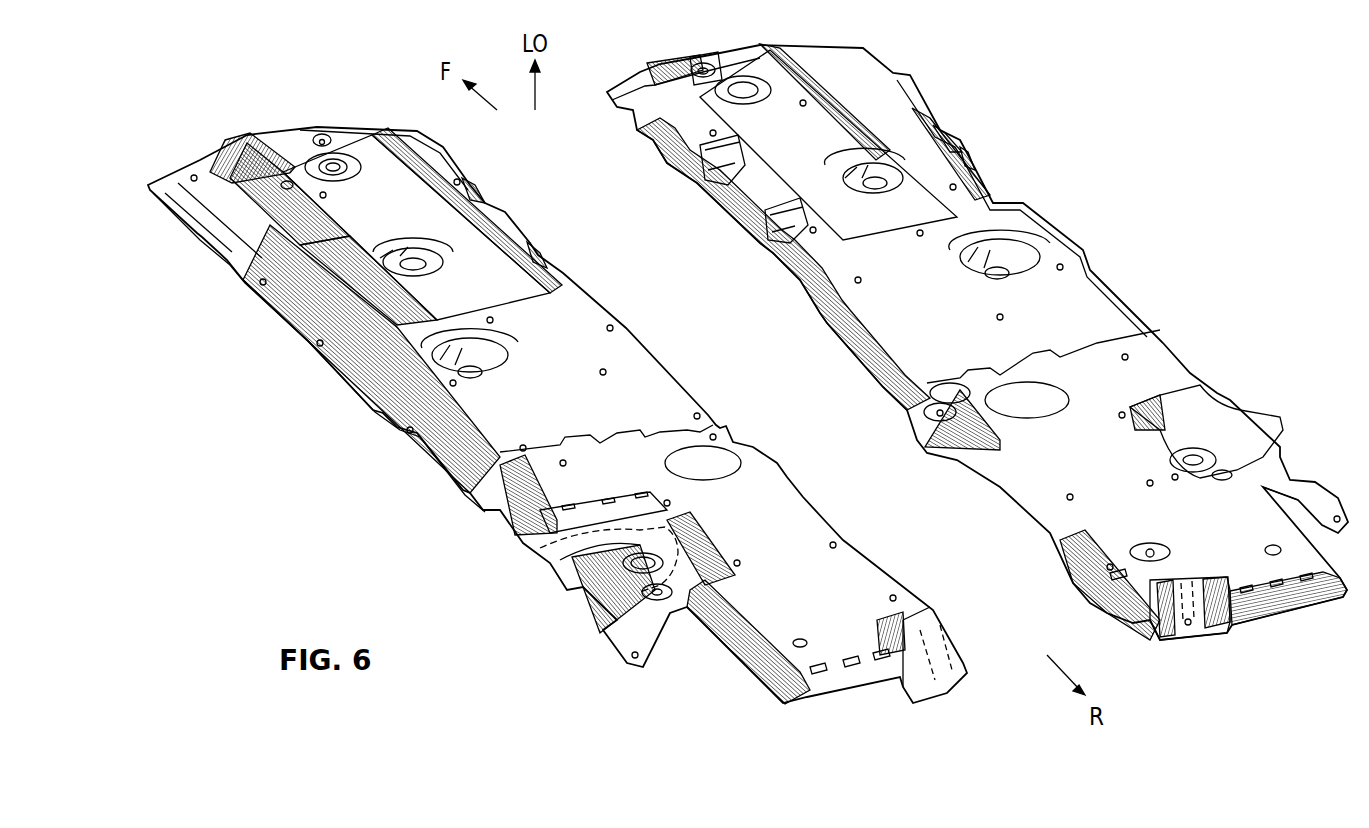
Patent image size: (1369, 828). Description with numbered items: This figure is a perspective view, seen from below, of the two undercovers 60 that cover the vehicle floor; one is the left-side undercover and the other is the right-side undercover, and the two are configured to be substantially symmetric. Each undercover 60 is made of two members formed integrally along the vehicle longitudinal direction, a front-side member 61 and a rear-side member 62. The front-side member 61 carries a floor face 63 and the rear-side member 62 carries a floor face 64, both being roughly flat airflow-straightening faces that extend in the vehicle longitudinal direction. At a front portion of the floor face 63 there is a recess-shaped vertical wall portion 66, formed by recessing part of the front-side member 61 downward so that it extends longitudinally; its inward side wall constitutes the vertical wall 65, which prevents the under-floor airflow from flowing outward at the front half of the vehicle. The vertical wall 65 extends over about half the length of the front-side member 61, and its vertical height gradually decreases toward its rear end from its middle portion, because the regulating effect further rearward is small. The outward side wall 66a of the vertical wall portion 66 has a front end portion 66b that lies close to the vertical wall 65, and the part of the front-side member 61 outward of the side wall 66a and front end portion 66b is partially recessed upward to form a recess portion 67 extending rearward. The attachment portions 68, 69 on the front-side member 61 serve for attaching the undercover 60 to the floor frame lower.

The undercover 60 is at (375, 415).
The front-side member 61 is at (630, 327).
The rear-side member 62 is at (800, 494).
The floor face 63 is at (573, 371).
The floor face 64 is at (792, 532).
The vertical wall 65 is at (330, 218).
The vertical wall portion 66 is at (534, 180).
The side wall 66a is at (299, 280).
The front end portion 66b is at (218, 160).
The recess portion 67 is at (293, 272).
The attachment portion 68 is at (437, 270).
The attachment portion 69 is at (497, 378).